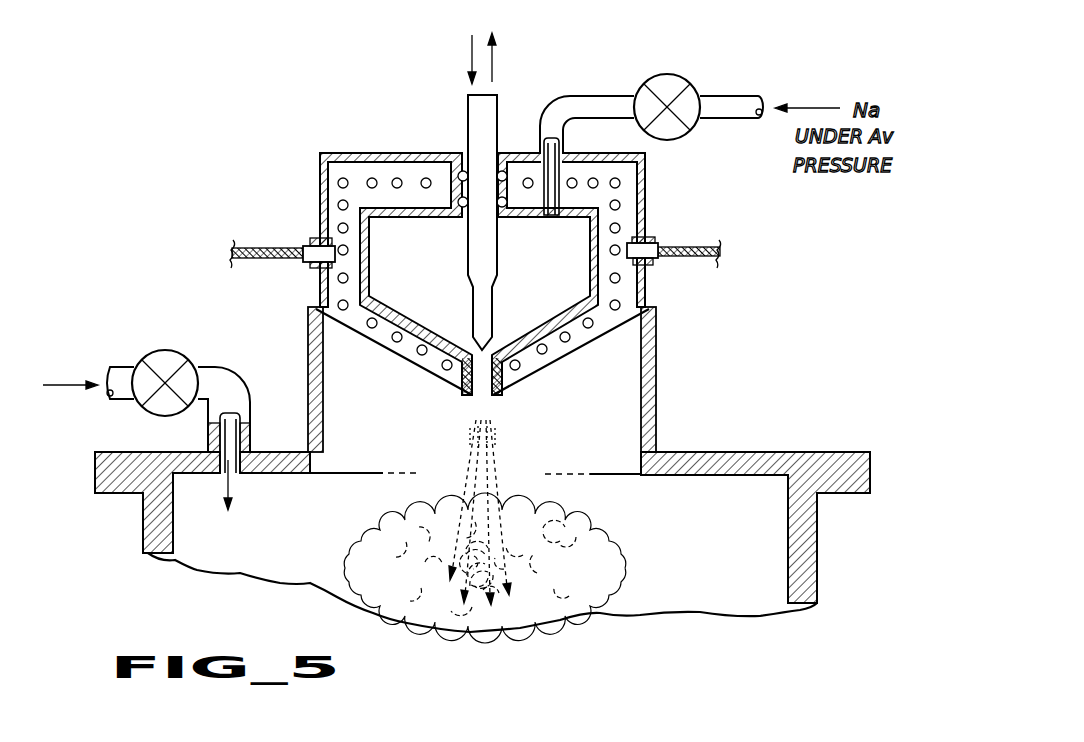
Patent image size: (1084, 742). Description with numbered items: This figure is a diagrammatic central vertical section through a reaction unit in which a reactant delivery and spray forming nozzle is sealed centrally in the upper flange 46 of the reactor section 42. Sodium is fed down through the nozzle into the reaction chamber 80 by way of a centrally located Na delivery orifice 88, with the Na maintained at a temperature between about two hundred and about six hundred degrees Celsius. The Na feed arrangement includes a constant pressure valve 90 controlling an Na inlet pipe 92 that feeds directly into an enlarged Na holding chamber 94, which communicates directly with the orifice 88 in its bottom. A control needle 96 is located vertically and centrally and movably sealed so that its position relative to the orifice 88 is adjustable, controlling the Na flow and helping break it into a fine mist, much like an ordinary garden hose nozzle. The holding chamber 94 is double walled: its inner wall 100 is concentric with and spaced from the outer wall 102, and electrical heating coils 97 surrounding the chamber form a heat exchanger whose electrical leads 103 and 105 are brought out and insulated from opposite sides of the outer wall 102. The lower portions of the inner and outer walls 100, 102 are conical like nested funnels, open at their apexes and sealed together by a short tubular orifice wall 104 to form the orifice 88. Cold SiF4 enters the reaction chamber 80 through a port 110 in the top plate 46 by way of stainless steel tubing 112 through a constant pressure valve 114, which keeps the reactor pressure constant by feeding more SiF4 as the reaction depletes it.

The reactor section 42 is at (898, 561).
The upper flange 46 is at (732, 460).
The reaction chamber 80 is at (800, 545).
The Na delivery orifice 88 is at (480, 380).
The constant pressure valve 90 is at (663, 75).
The Na inlet pipe 92 is at (740, 97).
The Na holding chamber 94 is at (533, 276).
The control needle 96 is at (490, 118).
The electrical heating coils 97 is at (372, 178).
The inner wall 100 is at (373, 262).
The outer wall 102 is at (317, 283).
The electrical lead 103 is at (273, 245).
The orifice wall 104 is at (488, 387).
The electrical lead 105 is at (687, 238).
The port 110 is at (232, 465).
The stainless steel tubing 112 is at (212, 363).
The constant pressure valve 114 is at (158, 350).